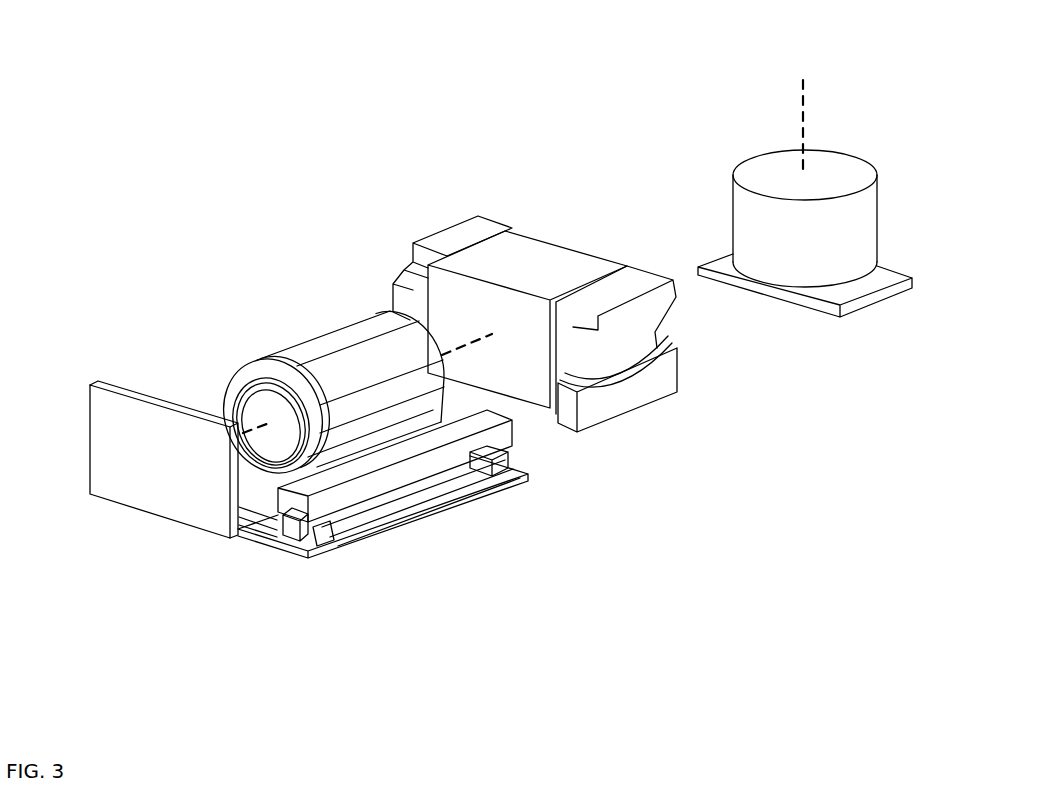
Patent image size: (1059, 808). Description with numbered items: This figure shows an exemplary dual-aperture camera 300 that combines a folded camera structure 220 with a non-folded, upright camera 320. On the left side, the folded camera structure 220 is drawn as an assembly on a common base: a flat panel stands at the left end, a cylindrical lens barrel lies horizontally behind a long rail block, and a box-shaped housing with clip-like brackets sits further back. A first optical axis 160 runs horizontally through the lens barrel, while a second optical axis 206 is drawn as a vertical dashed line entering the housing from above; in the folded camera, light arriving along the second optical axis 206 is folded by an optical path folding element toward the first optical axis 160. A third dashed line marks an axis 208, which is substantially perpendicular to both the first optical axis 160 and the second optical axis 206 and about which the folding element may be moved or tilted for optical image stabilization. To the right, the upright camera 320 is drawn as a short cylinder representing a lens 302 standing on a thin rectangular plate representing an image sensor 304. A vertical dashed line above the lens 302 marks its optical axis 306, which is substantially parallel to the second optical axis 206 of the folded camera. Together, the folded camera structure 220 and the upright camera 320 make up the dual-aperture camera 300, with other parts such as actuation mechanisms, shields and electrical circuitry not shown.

The dual-aperture camera 300 is at (392, 110).
The first optical axis 160 is at (158, 463).
The second optical axis 206 is at (533, 266).
The axis 208 is at (620, 338).
The folded camera structure 220 is at (762, 342).
The lens 302 is at (763, 168).
The image sensor 304 is at (712, 258).
The optical axis 306 is at (803, 110).
The upright camera 320 is at (802, 325).